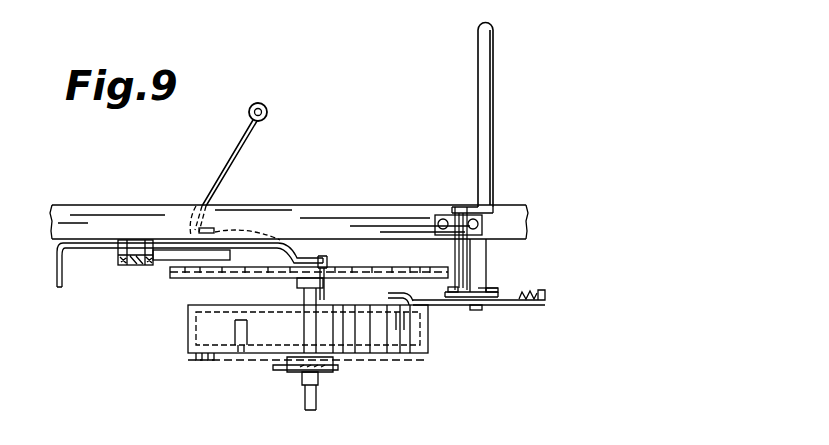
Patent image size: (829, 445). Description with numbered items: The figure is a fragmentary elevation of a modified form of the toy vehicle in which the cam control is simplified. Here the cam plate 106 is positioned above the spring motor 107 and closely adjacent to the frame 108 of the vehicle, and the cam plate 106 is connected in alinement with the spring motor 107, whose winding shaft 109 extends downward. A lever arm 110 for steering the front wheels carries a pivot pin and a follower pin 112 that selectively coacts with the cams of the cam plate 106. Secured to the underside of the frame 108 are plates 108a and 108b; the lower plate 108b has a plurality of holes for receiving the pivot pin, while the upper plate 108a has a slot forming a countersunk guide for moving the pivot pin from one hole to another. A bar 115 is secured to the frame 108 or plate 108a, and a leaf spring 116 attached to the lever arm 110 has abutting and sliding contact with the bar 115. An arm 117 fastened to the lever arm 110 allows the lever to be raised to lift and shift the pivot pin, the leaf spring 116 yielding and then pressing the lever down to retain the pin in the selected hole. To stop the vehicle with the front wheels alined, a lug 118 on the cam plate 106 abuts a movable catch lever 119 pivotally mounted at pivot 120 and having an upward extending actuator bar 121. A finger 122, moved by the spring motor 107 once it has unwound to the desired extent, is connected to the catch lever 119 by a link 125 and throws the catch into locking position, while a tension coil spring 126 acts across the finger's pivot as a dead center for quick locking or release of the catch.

The cam plate 106 is at (398, 267).
The spring motor 107 is at (243, 345).
The frame 108 is at (427, 208).
The plate 108a is at (113, 262).
The plate 108b is at (119, 257).
The winding shaft 109 is at (317, 395).
The lever arm 110 is at (75, 253).
The follower pin 112 is at (328, 258).
The bar 115 is at (215, 232).
The leaf spring 116 is at (248, 241).
The arm 117 is at (245, 150).
The lug 118 is at (405, 280).
The catch lever 119 is at (437, 284).
The pivot 120 is at (462, 267).
The actuator bar 121 is at (487, 157).
The finger 122 is at (430, 307).
The link 125 is at (490, 289).
The tension coil spring 126 is at (521, 302).